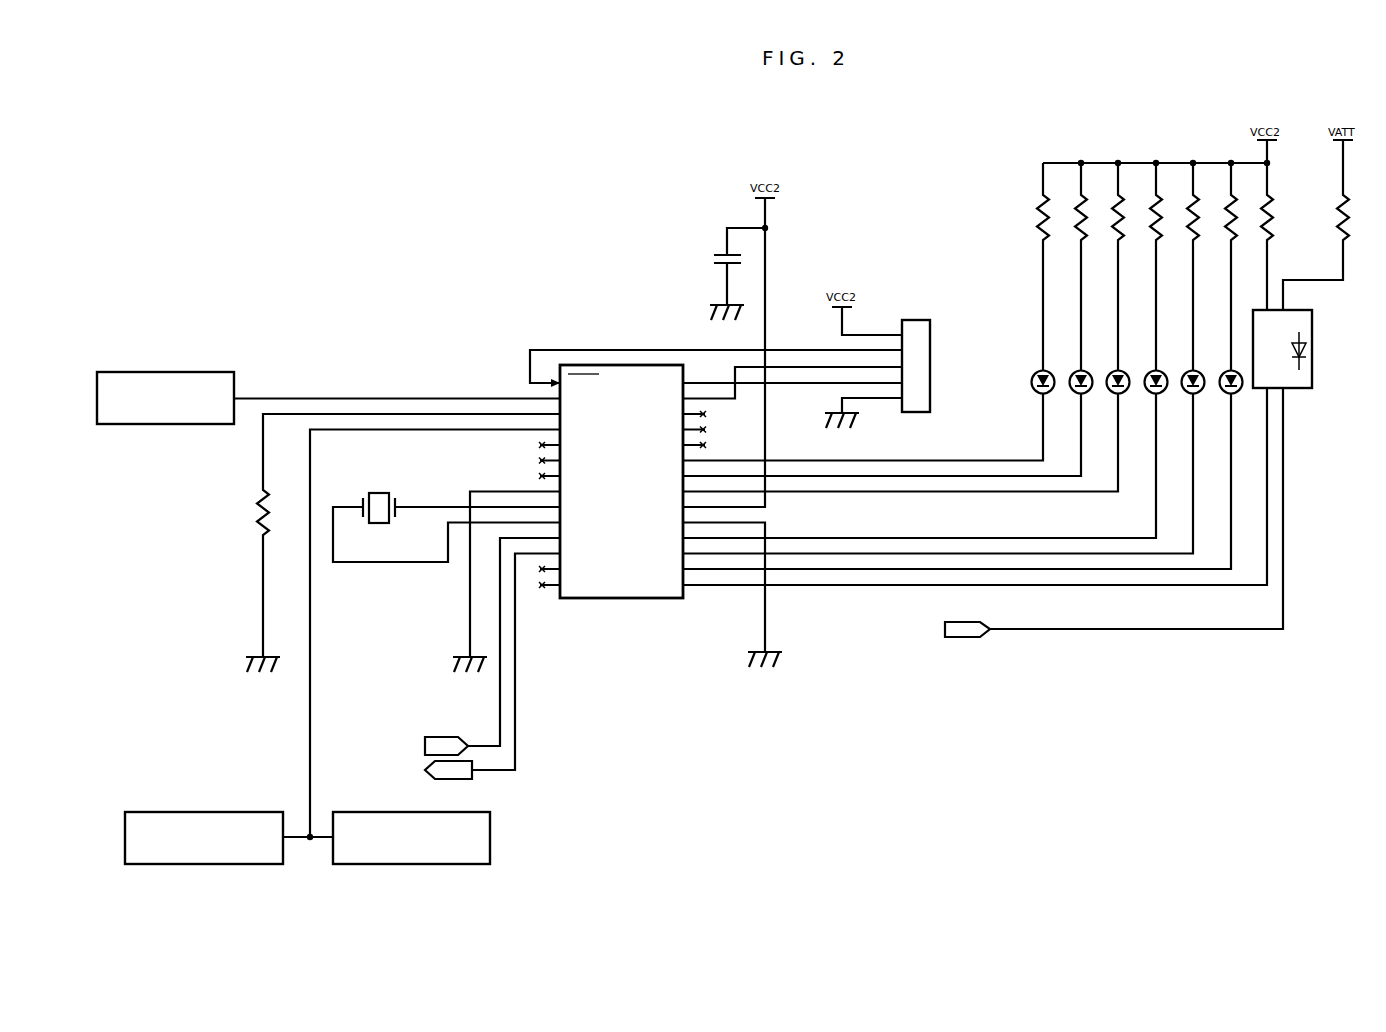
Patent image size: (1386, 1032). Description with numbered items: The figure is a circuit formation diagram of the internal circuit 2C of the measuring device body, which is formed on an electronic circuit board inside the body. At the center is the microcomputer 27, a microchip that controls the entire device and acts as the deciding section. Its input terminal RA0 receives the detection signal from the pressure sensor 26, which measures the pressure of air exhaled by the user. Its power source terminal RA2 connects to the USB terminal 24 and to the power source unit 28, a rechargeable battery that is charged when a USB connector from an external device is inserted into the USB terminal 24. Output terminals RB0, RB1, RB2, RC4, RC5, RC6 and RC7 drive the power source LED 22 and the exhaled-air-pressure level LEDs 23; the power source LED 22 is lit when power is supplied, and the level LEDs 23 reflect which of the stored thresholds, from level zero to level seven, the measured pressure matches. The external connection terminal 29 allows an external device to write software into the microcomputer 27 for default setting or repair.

The internal circuit 2C is at (951, 113).
The power source LED 22 is at (1312, 358).
The exhaled-air-pressure level LEDs 23 is at (1034, 374).
The USB terminal 24 is at (200, 812).
The pressure sensor 26 is at (130, 372).
The microcomputer 27 is at (621, 598).
The power source unit 28 is at (388, 812).
The external connection terminal 29 is at (915, 412).